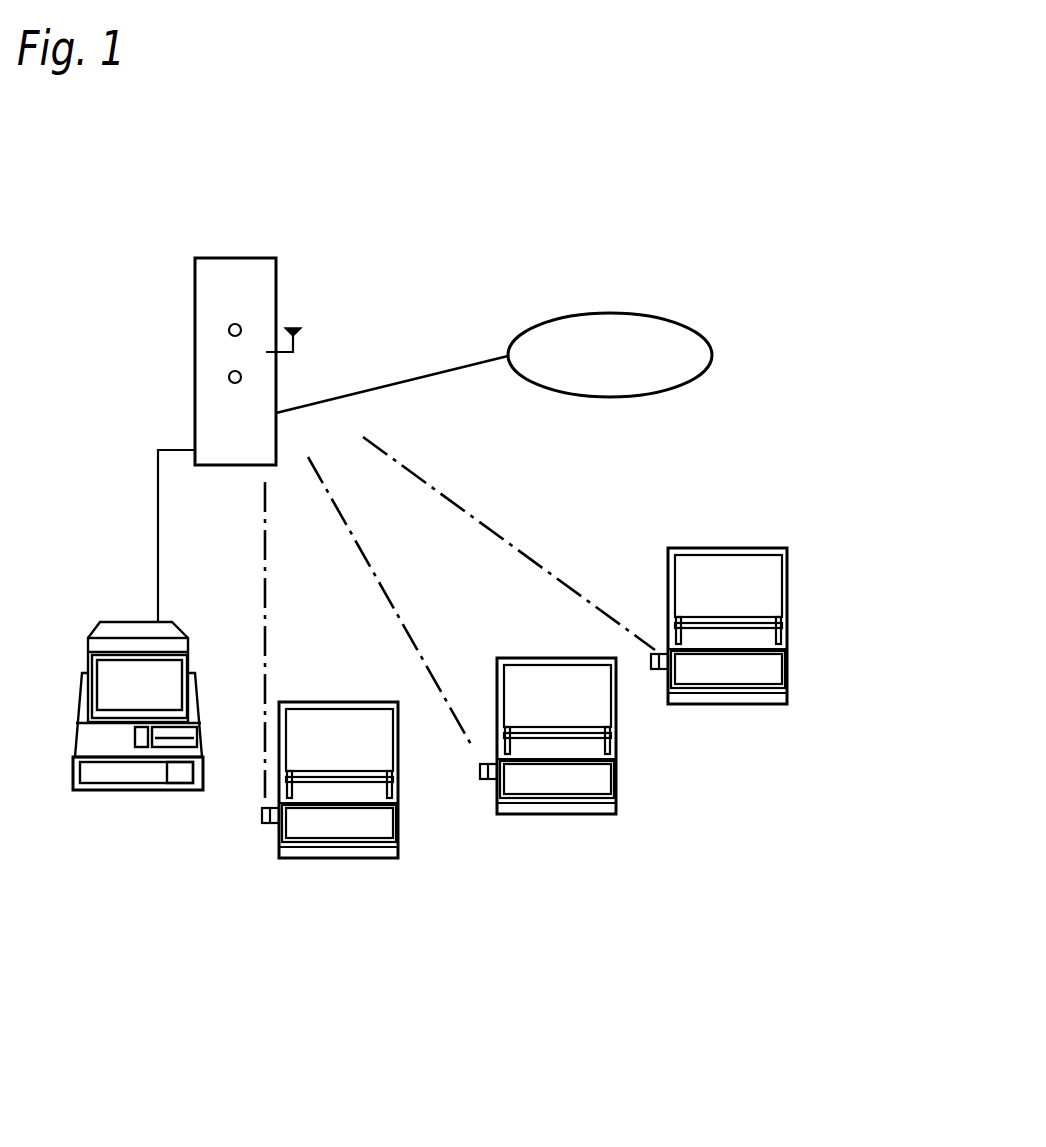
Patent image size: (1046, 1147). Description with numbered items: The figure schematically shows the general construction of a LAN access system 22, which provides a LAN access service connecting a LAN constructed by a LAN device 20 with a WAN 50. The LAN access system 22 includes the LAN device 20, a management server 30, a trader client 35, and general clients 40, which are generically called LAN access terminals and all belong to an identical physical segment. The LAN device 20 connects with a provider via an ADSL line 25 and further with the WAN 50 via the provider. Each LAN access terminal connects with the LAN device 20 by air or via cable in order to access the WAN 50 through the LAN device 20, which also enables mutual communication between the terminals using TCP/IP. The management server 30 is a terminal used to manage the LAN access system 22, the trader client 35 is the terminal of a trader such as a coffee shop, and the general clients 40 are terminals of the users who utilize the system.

The LAN device 20 is at (276, 302).
The LAN access system 22 is at (482, 958).
The ADSL line 25 is at (400, 377).
The management server 30 is at (142, 792).
The trader client 35 is at (345, 860).
The general clients 40 is at (580, 819).
The WAN 50 is at (673, 318).